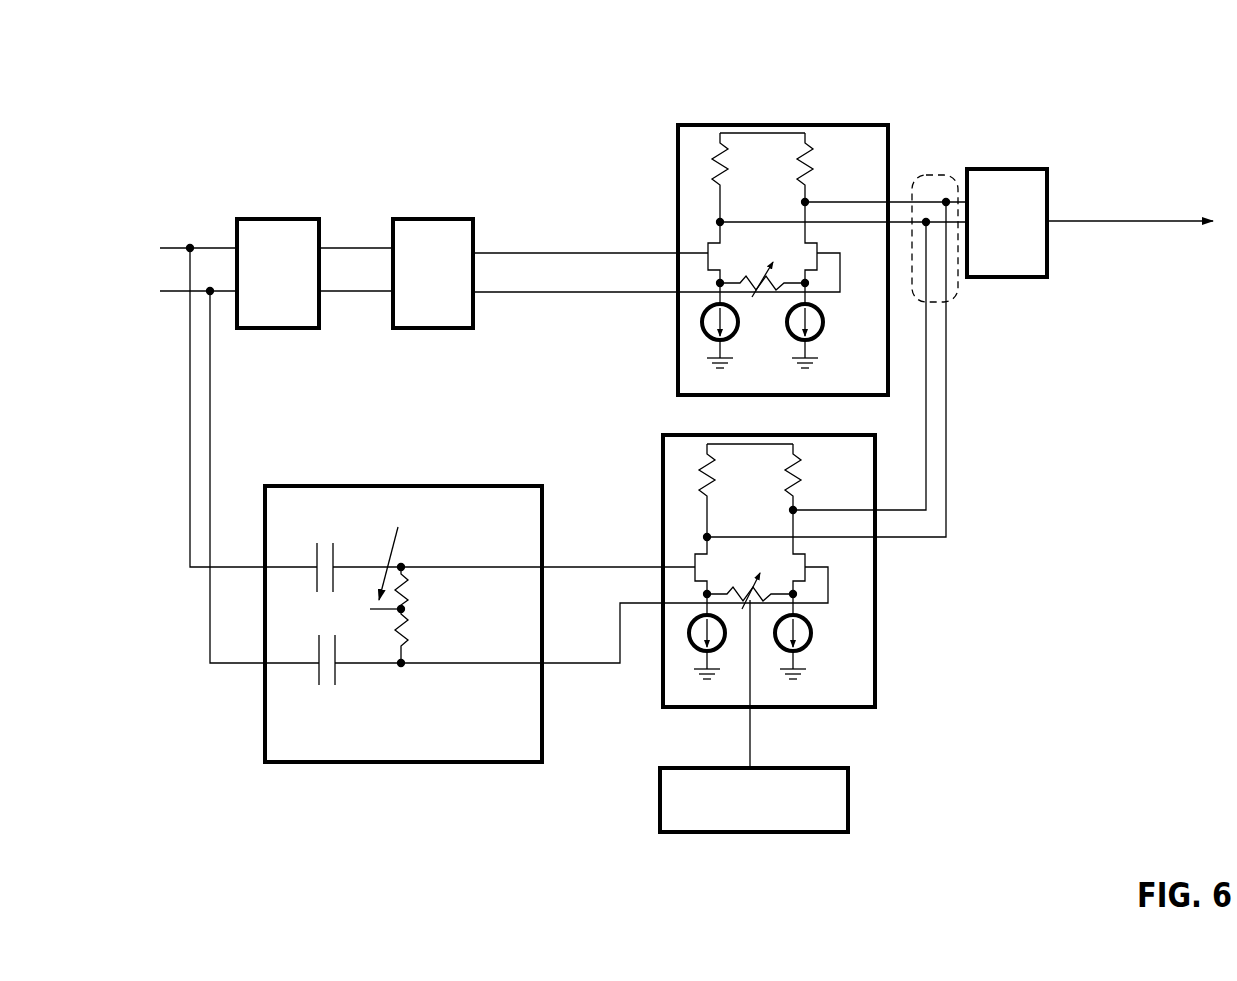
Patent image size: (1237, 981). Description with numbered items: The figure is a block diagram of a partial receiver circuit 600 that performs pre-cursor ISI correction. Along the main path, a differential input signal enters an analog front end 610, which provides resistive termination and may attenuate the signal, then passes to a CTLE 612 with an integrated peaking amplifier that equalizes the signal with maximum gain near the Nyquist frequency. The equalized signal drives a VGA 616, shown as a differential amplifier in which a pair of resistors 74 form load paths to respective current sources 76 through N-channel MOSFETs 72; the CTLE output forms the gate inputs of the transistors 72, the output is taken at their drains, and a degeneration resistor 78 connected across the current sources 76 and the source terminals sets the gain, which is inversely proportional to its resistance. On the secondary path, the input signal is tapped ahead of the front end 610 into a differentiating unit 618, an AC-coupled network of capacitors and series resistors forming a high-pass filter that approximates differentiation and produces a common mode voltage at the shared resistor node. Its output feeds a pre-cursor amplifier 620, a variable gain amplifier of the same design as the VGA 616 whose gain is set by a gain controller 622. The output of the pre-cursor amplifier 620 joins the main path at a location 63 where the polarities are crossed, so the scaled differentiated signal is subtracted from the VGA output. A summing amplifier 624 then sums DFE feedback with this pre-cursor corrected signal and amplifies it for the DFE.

The partial receiver circuit 600 is at (1126, 86).
The analog front end 610 is at (261, 284).
The CTLE 612 is at (416, 284).
The VGA 616 is at (839, 162).
The differentiating unit 618 is at (460, 744).
The pre-cursor amplifier 620 is at (823, 474).
The gain controller 622 is at (737, 811).
The summing amplifier 624 is at (989, 229).
The location 63 is at (955, 298).
The N-channel MOSFETs 72 is at (702, 246).
The resistors 74 is at (710, 165).
The current sources 76 is at (702, 324).
The degeneration resistor 78 is at (762, 292).